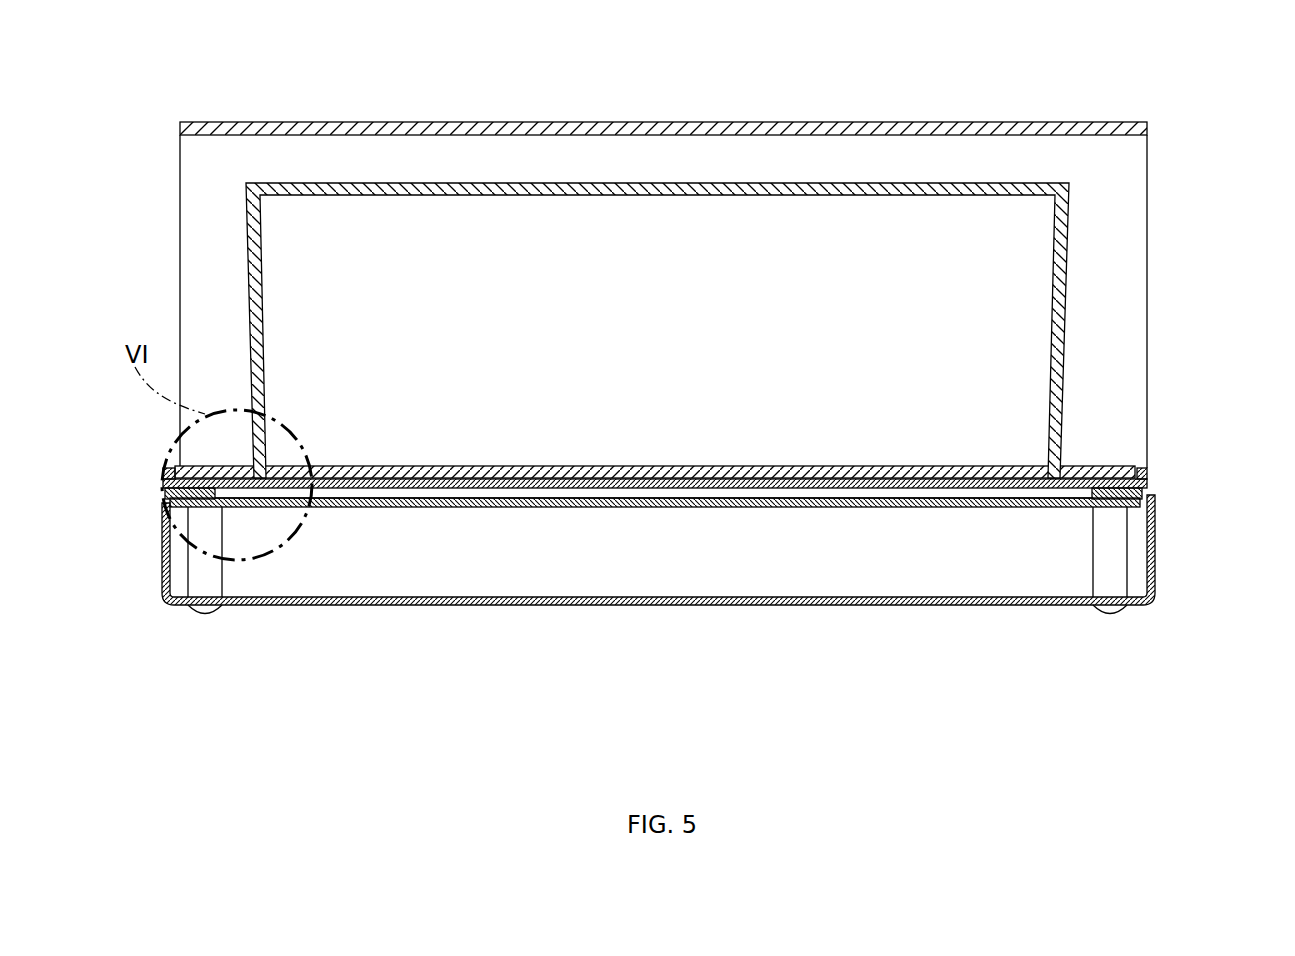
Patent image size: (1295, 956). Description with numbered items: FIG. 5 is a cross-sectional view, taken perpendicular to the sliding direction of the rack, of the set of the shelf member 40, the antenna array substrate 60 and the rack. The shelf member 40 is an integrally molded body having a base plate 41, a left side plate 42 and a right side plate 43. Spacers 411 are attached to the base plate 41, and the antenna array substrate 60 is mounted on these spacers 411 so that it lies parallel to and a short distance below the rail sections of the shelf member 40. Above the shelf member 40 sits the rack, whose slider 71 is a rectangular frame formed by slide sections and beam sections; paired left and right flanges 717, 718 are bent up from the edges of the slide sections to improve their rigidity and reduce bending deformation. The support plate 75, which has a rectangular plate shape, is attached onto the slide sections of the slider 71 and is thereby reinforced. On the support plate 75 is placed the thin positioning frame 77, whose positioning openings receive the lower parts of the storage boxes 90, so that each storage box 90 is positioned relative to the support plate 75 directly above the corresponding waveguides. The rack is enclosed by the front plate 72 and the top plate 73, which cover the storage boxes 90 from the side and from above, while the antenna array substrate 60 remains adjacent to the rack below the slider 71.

The top plate 73 is at (690, 130).
The front plate 72 is at (196, 222).
The storage box 90 is at (1065, 310).
The support plate 75 is at (722, 478).
The positioning frame 77 is at (1098, 467).
The flange 717 is at (1150, 478).
The flange 718 is at (165, 474).
The slider 71 is at (1162, 484).
The shelf member 40 is at (675, 589).
The right side plate 43 is at (162, 553).
The left side plate 42 is at (1157, 572).
The base plate 41 is at (858, 605).
The spacer 411 is at (205, 578).
The antenna array substrate 60 is at (720, 508).